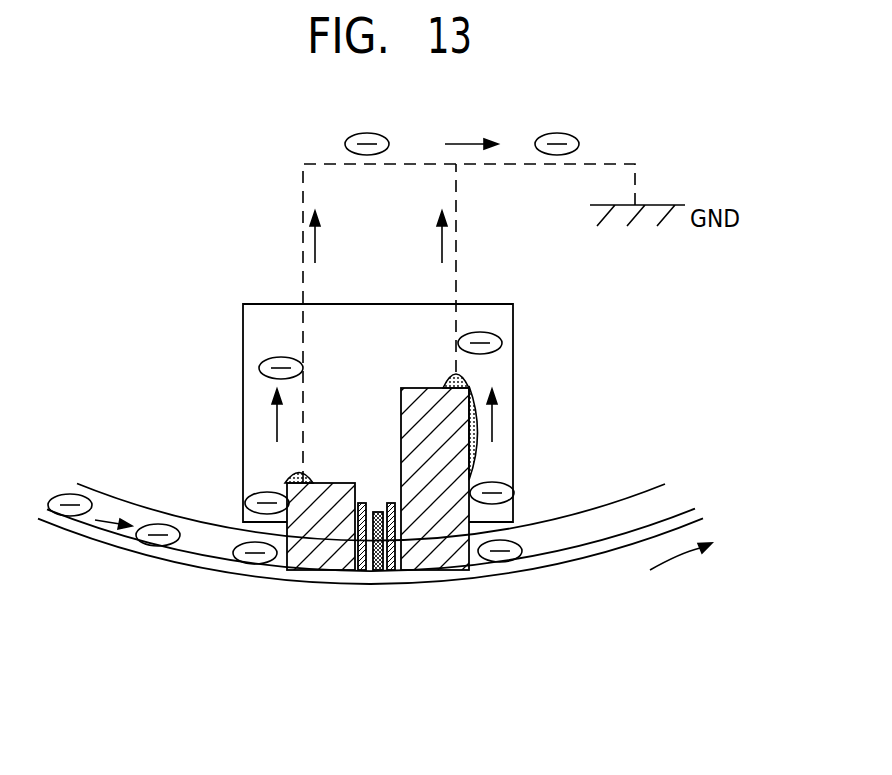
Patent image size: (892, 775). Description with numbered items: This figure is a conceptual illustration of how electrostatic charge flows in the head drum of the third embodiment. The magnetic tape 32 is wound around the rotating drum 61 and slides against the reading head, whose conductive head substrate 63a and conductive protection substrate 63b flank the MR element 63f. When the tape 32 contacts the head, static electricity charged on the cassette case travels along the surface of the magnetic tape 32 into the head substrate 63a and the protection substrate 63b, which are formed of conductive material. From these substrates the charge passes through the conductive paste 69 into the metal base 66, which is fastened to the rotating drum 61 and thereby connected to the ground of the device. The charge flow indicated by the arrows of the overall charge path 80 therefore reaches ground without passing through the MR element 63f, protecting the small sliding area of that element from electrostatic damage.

The charge eliminating device 80 is at (96, 243).
The metal base 66 is at (513, 315).
The head substrate 63a is at (433, 549).
The protection substrate 63b is at (322, 548).
The MR element 63f is at (378, 572).
The conductive paste 69 is at (283, 483).
The rotating drum 61 is at (113, 482).
The magnetic tape 32 is at (578, 563).